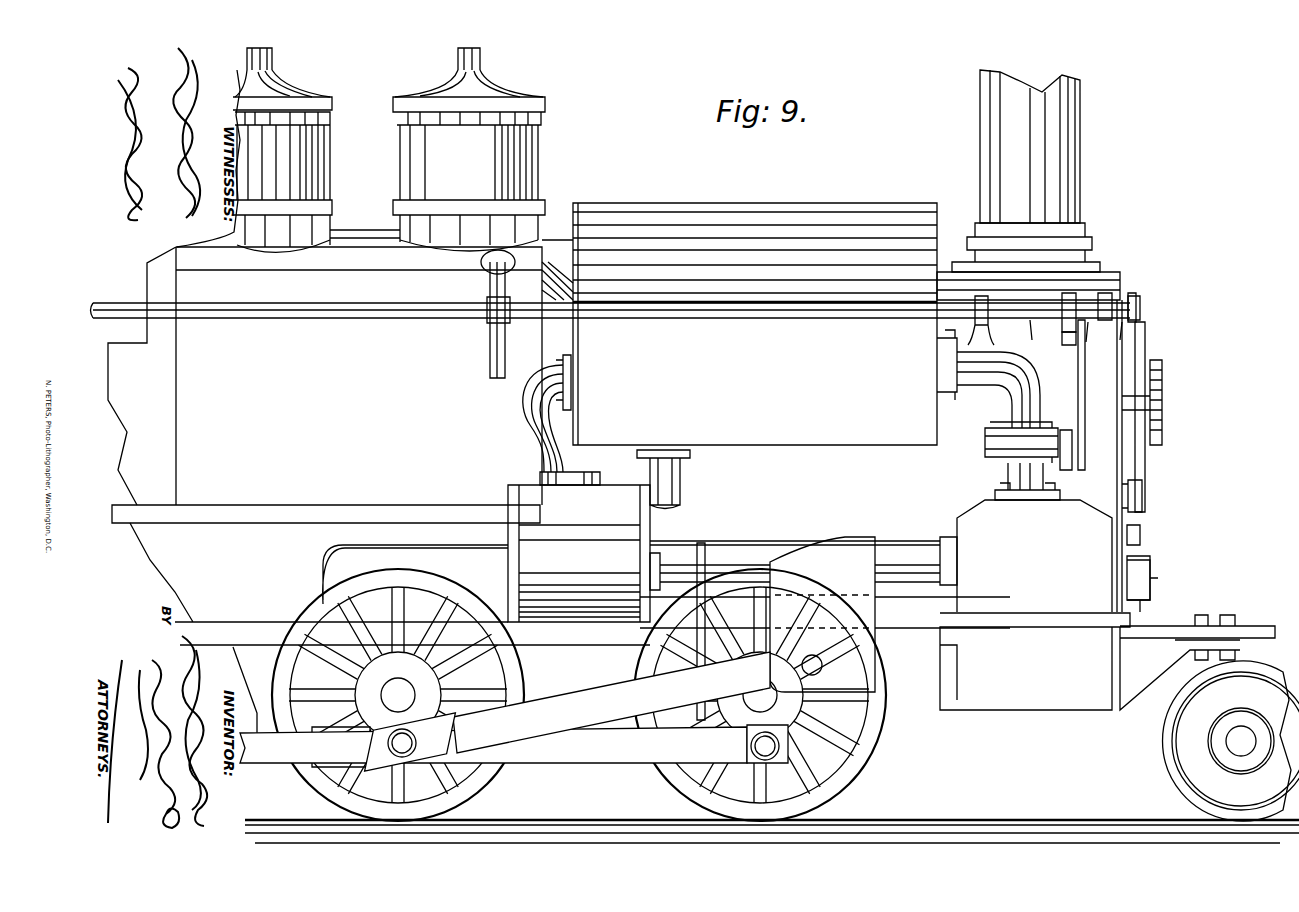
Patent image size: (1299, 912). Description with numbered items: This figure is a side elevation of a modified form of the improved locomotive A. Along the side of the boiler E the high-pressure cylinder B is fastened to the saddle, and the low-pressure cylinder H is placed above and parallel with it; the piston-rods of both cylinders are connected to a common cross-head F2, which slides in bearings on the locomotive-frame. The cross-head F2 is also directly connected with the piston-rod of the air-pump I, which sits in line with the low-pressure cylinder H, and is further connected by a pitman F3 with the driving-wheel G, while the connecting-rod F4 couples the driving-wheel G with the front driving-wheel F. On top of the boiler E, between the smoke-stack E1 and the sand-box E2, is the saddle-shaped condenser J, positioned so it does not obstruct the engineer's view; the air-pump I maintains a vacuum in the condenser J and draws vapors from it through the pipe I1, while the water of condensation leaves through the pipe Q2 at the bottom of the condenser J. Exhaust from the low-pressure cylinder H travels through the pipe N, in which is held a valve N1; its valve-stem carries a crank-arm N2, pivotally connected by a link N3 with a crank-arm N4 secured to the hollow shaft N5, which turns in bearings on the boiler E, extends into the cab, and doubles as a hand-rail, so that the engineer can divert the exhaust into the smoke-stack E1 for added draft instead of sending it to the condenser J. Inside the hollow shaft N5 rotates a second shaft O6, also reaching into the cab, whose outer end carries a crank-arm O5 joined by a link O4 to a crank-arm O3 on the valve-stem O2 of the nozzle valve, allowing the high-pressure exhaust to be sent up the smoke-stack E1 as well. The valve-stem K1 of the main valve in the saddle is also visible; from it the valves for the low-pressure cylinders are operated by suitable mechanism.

The boiler E is at (379, 486).
The sand-box E2 is at (522, 160).
The smoke-stack E1 is at (1072, 150).
The condenser J is at (765, 205).
The hollow shaft N5 is at (420, 318).
The crank-arm N4 is at (1064, 335).
The link N3 is at (1086, 395).
The crank-arm N2 is at (1075, 430).
The valve N1 is at (1052, 380).
The pipe N is at (1000, 408).
The locomotive A is at (1141, 421).
The shaft O6 is at (100, 305).
The crank-arm O5 is at (1136, 308).
The link O4 is at (1148, 462).
The crank-arm O3 is at (1135, 516).
The valve-stem O2 is at (1113, 512).
The low-pressure cylinder H is at (1034, 556).
The valve-stem K1 is at (1125, 572).
The high-pressure cylinder B is at (1107, 661).
The pipe I1 is at (530, 435).
The air-pump I is at (639, 553).
The pipe Q2 is at (680, 495).
The driving-wheel G is at (515, 672).
The front driving-wheel F is at (862, 775).
The cross-head F2 is at (822, 614).
The pitman F3 is at (612, 680).
The connecting-rod F4 is at (596, 752).